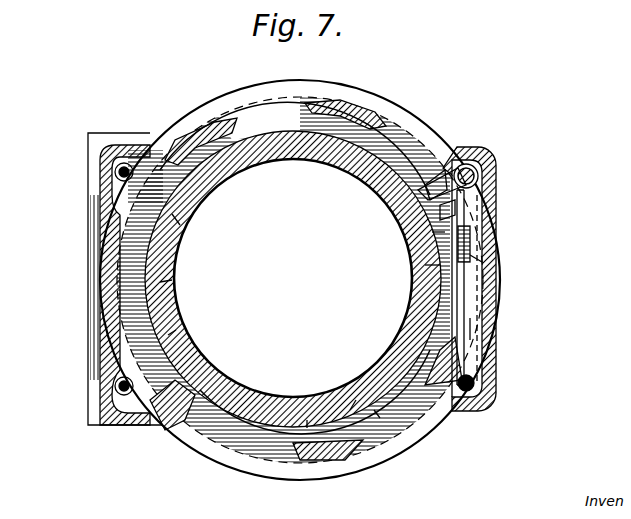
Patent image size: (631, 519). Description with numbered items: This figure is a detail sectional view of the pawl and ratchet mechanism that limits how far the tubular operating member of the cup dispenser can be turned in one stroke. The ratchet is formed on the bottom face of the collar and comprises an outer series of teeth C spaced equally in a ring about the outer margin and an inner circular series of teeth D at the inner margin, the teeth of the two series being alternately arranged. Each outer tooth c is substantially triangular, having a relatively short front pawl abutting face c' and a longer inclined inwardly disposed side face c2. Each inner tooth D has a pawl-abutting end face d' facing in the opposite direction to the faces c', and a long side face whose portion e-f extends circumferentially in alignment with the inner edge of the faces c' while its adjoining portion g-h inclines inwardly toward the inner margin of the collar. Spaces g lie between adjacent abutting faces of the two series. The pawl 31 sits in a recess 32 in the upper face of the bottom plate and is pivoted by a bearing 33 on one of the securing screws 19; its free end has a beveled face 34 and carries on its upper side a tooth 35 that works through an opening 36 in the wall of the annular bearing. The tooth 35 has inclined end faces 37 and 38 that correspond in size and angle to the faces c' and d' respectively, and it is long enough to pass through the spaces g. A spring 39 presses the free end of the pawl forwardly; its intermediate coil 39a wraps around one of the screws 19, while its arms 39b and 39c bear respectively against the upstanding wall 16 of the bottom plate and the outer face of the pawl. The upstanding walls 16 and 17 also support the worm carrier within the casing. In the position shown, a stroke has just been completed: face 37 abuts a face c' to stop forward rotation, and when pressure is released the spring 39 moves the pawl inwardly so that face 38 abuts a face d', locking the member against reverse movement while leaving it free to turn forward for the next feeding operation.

The upstanding wall 16 is at (102, 323).
The upstanding wall 17 is at (497, 293).
The screws 19 is at (116, 176).
The pawl 31 is at (462, 318).
The recess 32 is at (468, 212).
The bearing 33 is at (476, 383).
The beveled face 34 is at (476, 238).
The tooth 35 is at (425, 265).
The opening 36 is at (438, 183).
The inclined end face 37 is at (432, 232).
The inclined end face 38 is at (497, 270).
The spring 39 is at (479, 180).
The intermediate coil 39a is at (474, 164).
The upper arm 39b is at (484, 262).
The lower arm 39c is at (453, 214).
The outer series of teeth C is at (118, 270).
The outer ratchet teeth c is at (180, 180).
The front pawl abutting face c' is at (268, 303).
The inclined side face c2 is at (337, 458).
The inner circular series of teeth D is at (203, 193).
The pawl-abutting end face d' is at (276, 349).
The spaces g is at (178, 250).
The side face portion g-h is at (172, 280).
The circumferential side face portion e-f is at (176, 330).